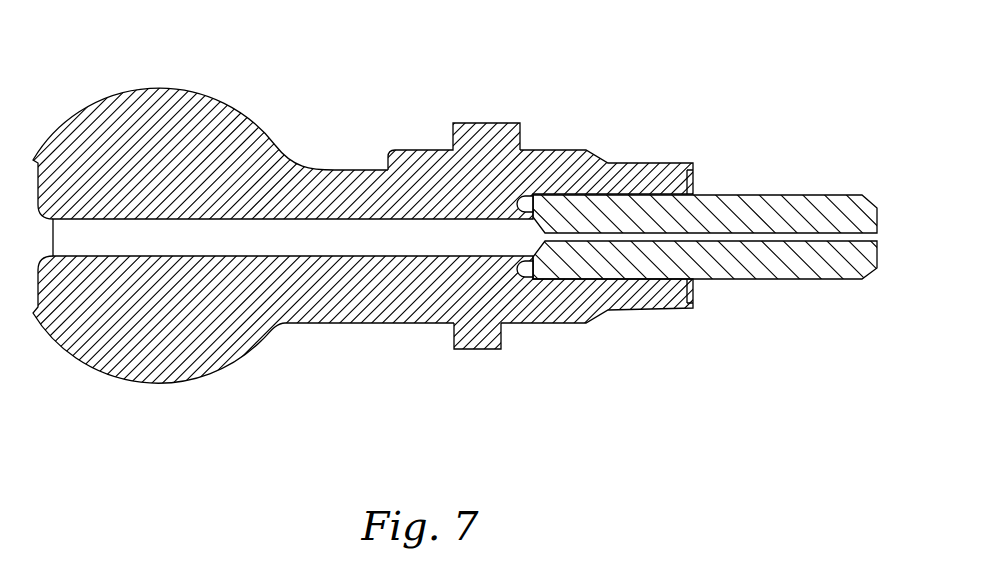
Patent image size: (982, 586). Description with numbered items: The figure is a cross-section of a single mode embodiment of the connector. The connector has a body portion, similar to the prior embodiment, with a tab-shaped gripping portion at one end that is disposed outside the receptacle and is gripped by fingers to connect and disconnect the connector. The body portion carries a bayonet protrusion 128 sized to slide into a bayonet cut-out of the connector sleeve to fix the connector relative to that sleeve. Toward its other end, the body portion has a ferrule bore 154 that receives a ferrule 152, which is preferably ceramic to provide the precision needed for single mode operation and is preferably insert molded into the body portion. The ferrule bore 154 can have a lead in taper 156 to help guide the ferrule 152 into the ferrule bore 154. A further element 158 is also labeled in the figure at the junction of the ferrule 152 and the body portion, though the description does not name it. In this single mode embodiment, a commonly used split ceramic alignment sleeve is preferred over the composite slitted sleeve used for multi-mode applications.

The bayonet protrusion 128 is at (482, 123).
The ferrule 152 is at (703, 226).
The ferrule bore 154 is at (632, 198).
The lead in taper 156 is at (695, 186).
The O-ring seal 158 is at (546, 196).